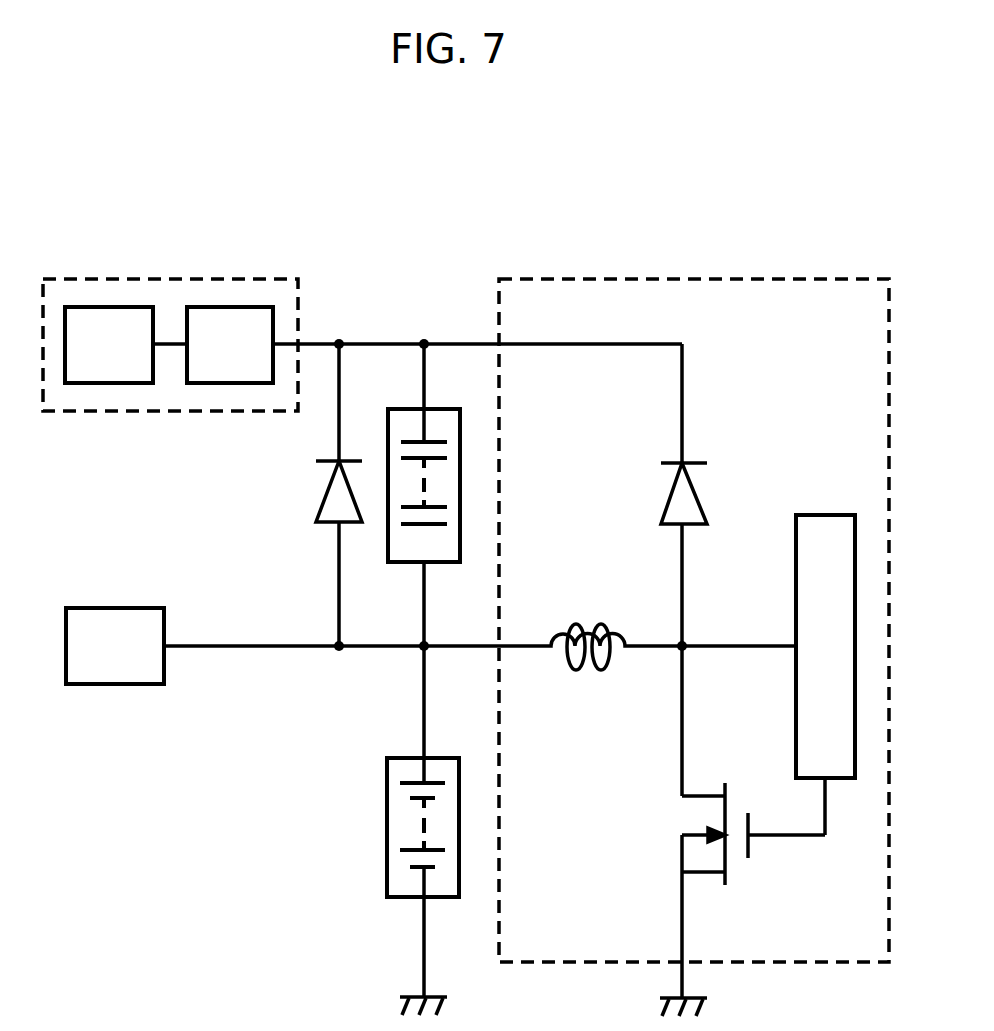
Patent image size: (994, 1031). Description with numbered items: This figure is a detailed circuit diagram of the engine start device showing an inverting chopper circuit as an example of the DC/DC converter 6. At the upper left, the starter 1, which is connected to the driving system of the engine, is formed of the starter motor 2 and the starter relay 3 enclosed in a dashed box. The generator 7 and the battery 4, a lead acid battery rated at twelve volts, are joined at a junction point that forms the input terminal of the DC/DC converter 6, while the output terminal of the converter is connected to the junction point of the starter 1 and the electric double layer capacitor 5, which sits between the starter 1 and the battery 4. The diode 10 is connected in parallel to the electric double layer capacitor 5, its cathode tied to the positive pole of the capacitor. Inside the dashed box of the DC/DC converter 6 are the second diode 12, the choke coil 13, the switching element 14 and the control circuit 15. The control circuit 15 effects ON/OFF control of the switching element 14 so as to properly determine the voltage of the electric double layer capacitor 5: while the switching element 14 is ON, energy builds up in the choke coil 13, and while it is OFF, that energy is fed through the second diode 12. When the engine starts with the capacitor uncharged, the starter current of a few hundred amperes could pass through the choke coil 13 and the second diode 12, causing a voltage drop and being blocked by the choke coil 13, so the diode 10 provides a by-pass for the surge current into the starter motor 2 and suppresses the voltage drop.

The starter 1 is at (170, 417).
The starter motor 2 is at (110, 305).
The starter relay 3 is at (230, 305).
The battery 4 is at (387, 799).
The electric double layer capacitor 5 is at (441, 407).
The DC/DC converter 6 is at (708, 278).
The generator 7 is at (113, 684).
The diode 10 is at (309, 483).
The second diode 12 is at (710, 490).
The choke coil 13 is at (592, 610).
The switching element 14 is at (678, 820).
The control circuit 15 is at (843, 778).